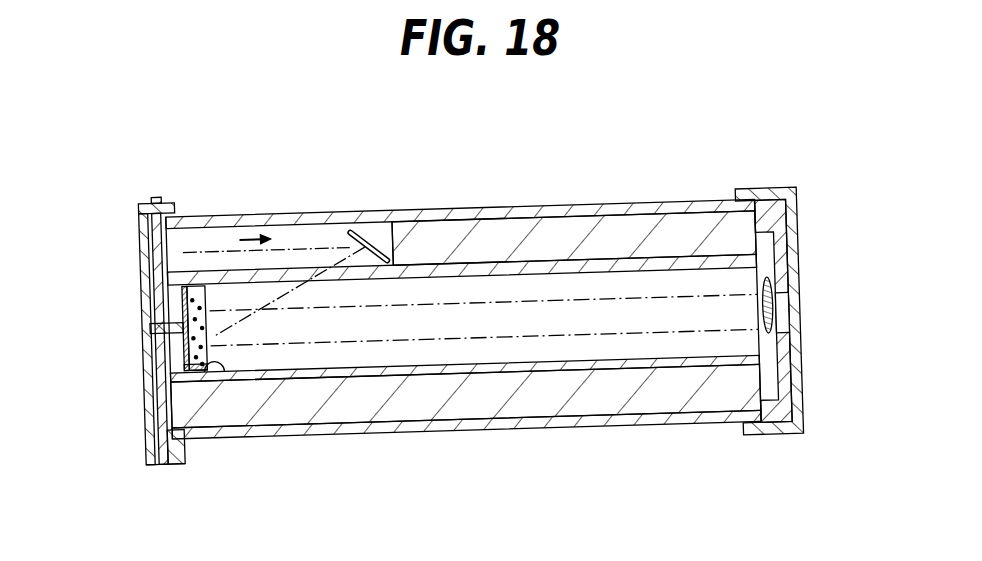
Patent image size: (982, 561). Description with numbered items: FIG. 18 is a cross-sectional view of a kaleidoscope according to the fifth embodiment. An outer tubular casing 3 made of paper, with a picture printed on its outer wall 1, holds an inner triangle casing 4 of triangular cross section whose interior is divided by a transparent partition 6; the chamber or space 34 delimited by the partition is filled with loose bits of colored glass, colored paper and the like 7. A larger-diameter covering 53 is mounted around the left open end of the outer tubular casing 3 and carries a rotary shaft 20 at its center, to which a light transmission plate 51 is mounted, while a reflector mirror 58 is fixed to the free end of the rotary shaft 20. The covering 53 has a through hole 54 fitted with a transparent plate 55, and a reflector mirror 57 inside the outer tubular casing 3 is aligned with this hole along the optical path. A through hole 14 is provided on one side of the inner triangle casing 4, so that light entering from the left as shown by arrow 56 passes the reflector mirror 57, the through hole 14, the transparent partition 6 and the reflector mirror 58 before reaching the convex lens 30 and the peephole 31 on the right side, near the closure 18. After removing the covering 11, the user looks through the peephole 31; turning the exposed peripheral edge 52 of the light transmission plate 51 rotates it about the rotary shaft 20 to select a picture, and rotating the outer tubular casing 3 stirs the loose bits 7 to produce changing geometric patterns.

The outer wall 1 is at (490, 212).
The outer tubular casing 3 is at (567, 445).
The inner triangle casing 4 is at (597, 212).
The transparent partition 6 is at (320, 433).
The loose bits of colored glass, colored paper and the like 7 is at (215, 372).
The covering 11 is at (793, 218).
The through hole 14 is at (212, 335).
The closure 18 is at (783, 368).
The rotary shaft 20 is at (148, 330).
The convex lens 30 is at (775, 287).
The peephole 31 is at (788, 300).
The chamber or space 34 is at (183, 343).
The light transmission plate 51 is at (145, 442).
The peripheral edge 52 is at (158, 200).
The covering 53 is at (145, 203).
The through hole 54 is at (150, 262).
The transparent plate 55 is at (148, 247).
The arrow 56 is at (262, 228).
The reflector mirror 57 is at (356, 264).
The reflector mirror 58 is at (186, 364).